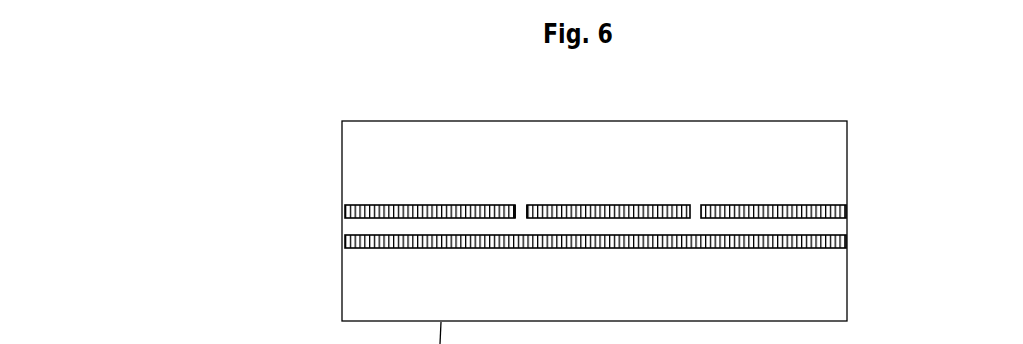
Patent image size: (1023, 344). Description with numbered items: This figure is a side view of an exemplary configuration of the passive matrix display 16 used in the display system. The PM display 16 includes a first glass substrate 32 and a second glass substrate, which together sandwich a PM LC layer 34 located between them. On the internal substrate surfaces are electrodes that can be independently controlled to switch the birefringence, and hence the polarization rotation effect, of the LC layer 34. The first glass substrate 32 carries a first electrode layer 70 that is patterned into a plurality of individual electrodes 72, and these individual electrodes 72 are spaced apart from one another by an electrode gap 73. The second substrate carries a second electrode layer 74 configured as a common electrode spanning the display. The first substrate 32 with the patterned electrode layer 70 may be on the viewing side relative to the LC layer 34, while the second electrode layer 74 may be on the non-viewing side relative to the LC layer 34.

The passive matrix display 16 is at (302, 110).
The first glass substrate 32 is at (396, 120).
The PM LC layer 34 is at (848, 226).
The first electrode layer 70 is at (848, 212).
The individual electrodes 72 is at (628, 205).
The electrode gap 73 is at (520, 207).
The second electrode layer 74 is at (848, 243).